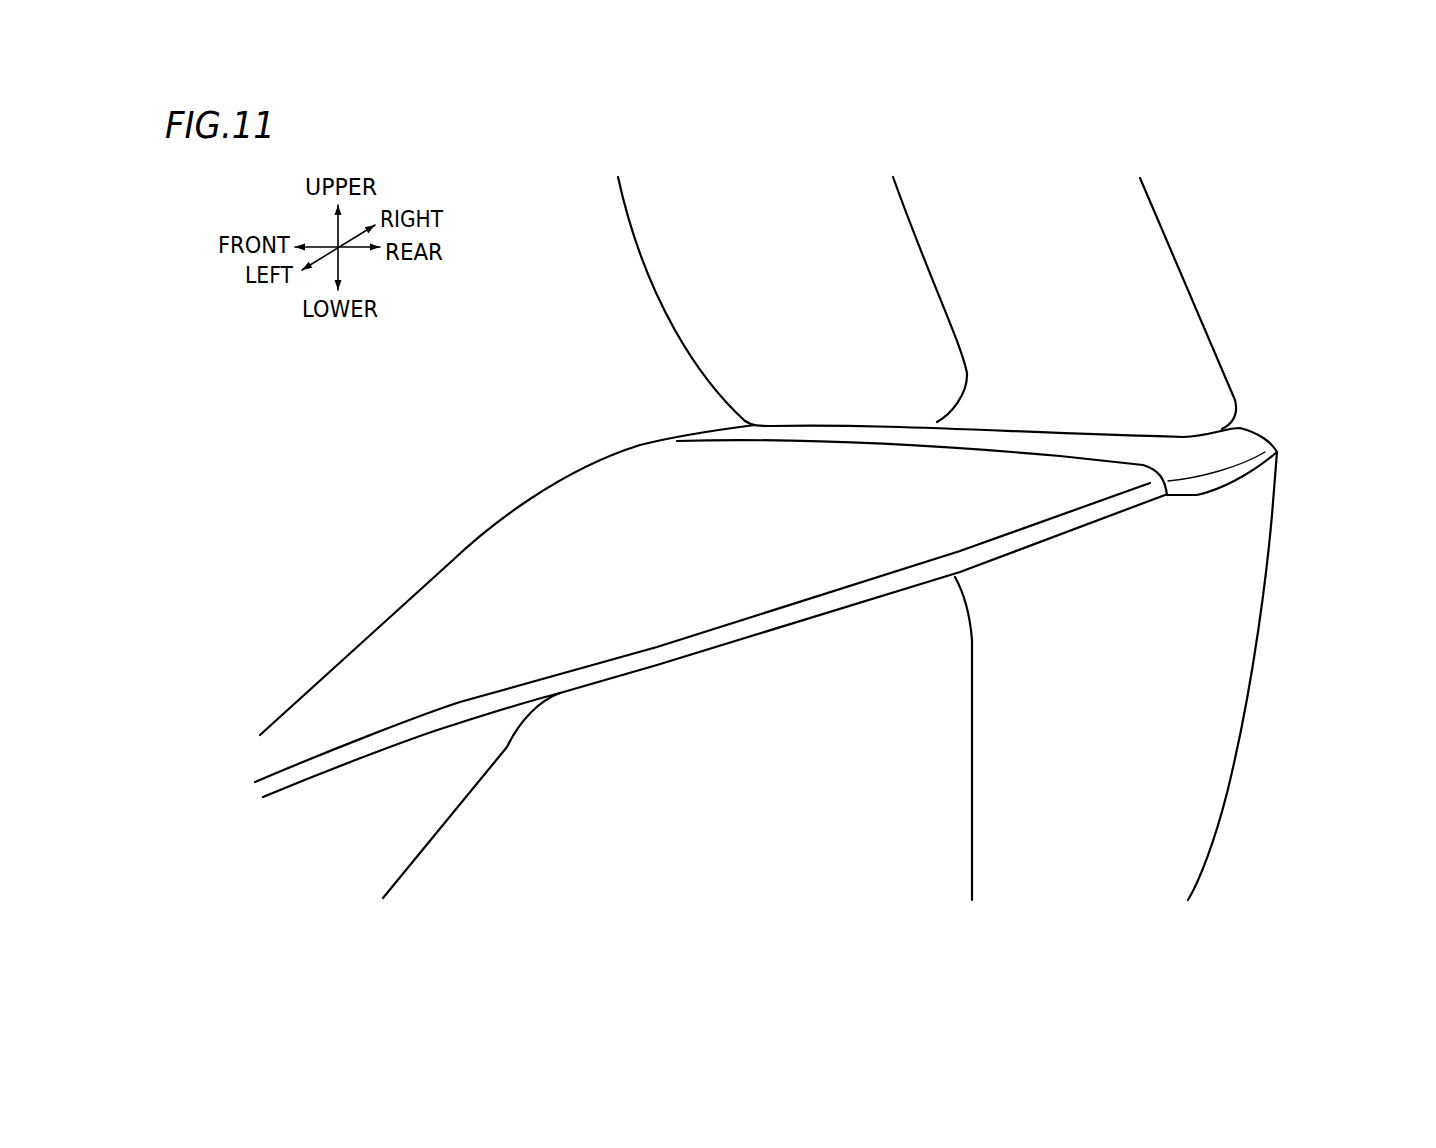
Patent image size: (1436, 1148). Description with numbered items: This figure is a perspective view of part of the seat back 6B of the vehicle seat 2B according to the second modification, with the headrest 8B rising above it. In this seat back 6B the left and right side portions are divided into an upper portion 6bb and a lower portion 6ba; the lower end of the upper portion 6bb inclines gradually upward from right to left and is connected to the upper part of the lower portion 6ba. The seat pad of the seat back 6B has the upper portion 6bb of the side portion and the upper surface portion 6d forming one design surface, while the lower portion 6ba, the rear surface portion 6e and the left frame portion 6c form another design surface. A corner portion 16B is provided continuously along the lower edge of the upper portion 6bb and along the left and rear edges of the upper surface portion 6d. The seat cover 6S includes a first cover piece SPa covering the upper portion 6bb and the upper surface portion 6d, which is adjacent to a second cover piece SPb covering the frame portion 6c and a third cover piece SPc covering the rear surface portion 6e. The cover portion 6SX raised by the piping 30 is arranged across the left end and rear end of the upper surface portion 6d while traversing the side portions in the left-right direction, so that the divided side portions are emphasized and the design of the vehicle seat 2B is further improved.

The vehicle seat 2B is at (1257, 252).
The headrest 8B is at (636, 303).
The seat back 6B is at (503, 481).
The seat cover 6S is at (811, 497).
The first cover piece SPa is at (480, 577).
The second cover piece SPb is at (937, 798).
The third cover piece SPc is at (1232, 608).
The cover portion raised by the piping 6SX is at (674, 645).
The piping 30 is at (714, 646).
The corner portion 16B is at (785, 633).
The upper surface portion 6d is at (834, 519).
The rear surface portion 6e is at (1127, 734).
The left frame portion 6c is at (754, 786).
The lower portion of the side portion 6ba is at (401, 819).
The upper portion of the side portion 6bb is at (401, 699).